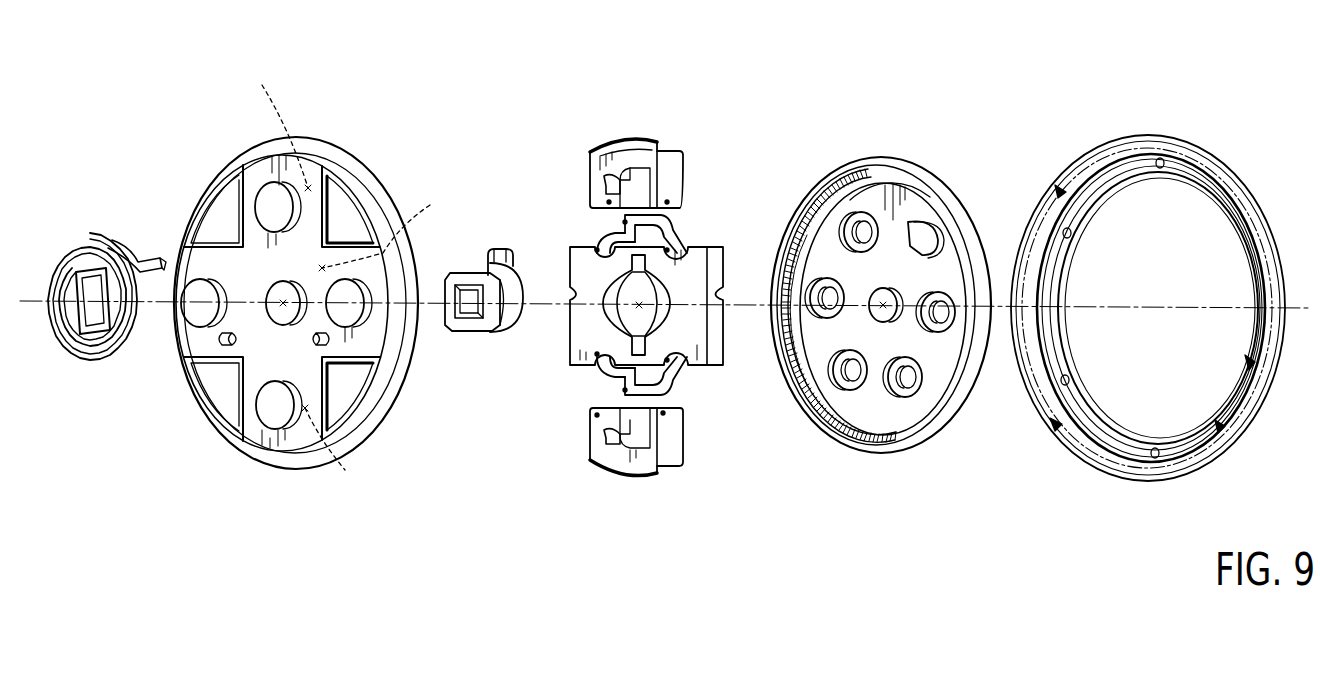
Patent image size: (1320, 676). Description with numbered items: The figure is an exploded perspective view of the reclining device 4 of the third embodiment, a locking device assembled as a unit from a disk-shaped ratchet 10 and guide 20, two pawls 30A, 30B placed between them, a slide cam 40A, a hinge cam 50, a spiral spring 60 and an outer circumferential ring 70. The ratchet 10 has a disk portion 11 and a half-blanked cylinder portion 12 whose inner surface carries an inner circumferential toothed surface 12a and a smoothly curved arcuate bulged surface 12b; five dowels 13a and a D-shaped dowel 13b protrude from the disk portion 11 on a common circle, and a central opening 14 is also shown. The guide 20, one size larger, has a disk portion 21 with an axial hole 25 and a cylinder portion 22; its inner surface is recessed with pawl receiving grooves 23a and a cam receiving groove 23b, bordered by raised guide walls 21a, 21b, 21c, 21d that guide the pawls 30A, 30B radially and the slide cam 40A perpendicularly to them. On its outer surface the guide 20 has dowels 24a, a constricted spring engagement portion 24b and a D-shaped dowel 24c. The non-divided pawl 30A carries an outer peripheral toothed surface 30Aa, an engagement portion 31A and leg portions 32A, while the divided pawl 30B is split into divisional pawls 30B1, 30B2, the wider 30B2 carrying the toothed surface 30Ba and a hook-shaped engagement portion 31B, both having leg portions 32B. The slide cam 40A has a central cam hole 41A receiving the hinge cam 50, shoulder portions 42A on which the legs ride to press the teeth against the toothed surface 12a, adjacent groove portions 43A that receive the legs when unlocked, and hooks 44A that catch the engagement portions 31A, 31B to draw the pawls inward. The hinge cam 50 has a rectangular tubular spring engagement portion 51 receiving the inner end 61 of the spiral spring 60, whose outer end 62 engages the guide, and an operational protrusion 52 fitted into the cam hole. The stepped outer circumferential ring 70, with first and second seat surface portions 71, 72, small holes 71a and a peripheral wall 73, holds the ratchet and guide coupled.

The reclining device 4 is at (848, 62).
The ratchet 10 is at (938, 183).
The disk portion 11 is at (905, 198).
The cylinder portion 12 is at (970, 258).
The inner circumferential toothed surface 12a is at (875, 180).
The arcuate bulged surface 12b is at (815, 220).
The dowels 13a is at (846, 236).
The D-shaped dowel 13b is at (922, 238).
The center shaft hole 14 is at (895, 298).
The guide 20 is at (336, 150).
The disk portion 21 is at (316, 212).
The guide wall 21a is at (232, 228).
The guide wall 21b is at (350, 228).
The guide wall 21c is at (228, 370).
The guide wall 21d is at (347, 377).
The cylinder portion 22 is at (345, 440).
The pawl receiving grooves 23a is at (291, 298).
The cam receiving groove 23b is at (409, 224).
The dowels 24a is at (275, 205).
The spring engagement portion 24b is at (237, 341).
The D-shaped dowel 24c is at (270, 415).
The axial hole 25 is at (286, 298).
The non-divided pawl 30A is at (680, 433).
The outer peripheral toothed surface 30Aa is at (662, 477).
The divided pawl 30B is at (686, 135).
The divisional pawl 30B1 is at (668, 168).
The divisional pawl 30B2 is at (625, 140).
The outer circumferential toothed surface 30Ba is at (648, 140).
The engagement portion 31A is at (613, 447).
The hook-shaped engagement portion 31B is at (610, 172).
The leg portions 32A is at (663, 413).
The leg portions 32B is at (667, 202).
The slide cam 40A is at (698, 262).
The cam hole 41A is at (642, 305).
The shoulder portions 42A is at (667, 250).
The groove portions 43A is at (673, 245).
The hooks 44A is at (625, 222).
The hinge cam 50 is at (495, 328).
The spring engagement portion 51 is at (478, 330).
The operational protrusion 52 is at (495, 258).
The spiral spring 60 is at (78, 240).
The inner end 61 is at (74, 335).
The outer end 62 is at (150, 262).
The outer circumferential ring 70 is at (1207, 163).
The first seat surface portion 71 is at (1110, 183).
The engagement hole 71a is at (1163, 168).
The second seat surface portion 72 is at (1037, 288).
The outer peripheral wall 73 is at (1255, 233).